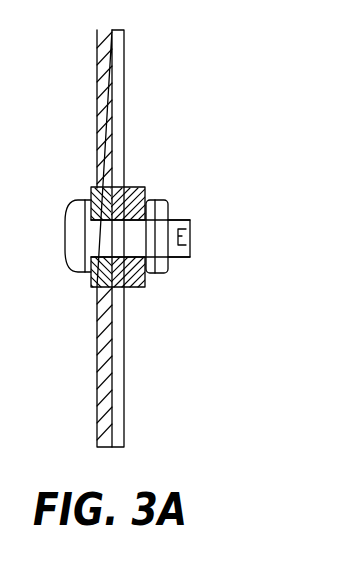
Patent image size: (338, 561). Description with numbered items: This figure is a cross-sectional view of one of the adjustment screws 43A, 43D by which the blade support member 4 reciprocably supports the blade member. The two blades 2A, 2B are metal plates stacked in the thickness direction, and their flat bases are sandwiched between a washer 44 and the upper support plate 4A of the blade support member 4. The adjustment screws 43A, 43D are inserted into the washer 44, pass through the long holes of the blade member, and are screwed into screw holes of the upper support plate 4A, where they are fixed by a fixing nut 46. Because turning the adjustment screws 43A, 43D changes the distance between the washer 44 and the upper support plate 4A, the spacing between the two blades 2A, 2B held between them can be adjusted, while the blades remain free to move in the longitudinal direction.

The blade 2A is at (124, 73).
The blade 2B is at (97, 112).
The blade support member 4 is at (133, 289).
The upper support plate 4A is at (121, 275).
The washer 44 is at (95, 287).
The fixing nut 46 is at (155, 200).
The adjustment screw 43A is at (191, 222).
The adjustment screw 43D is at (140, 238).